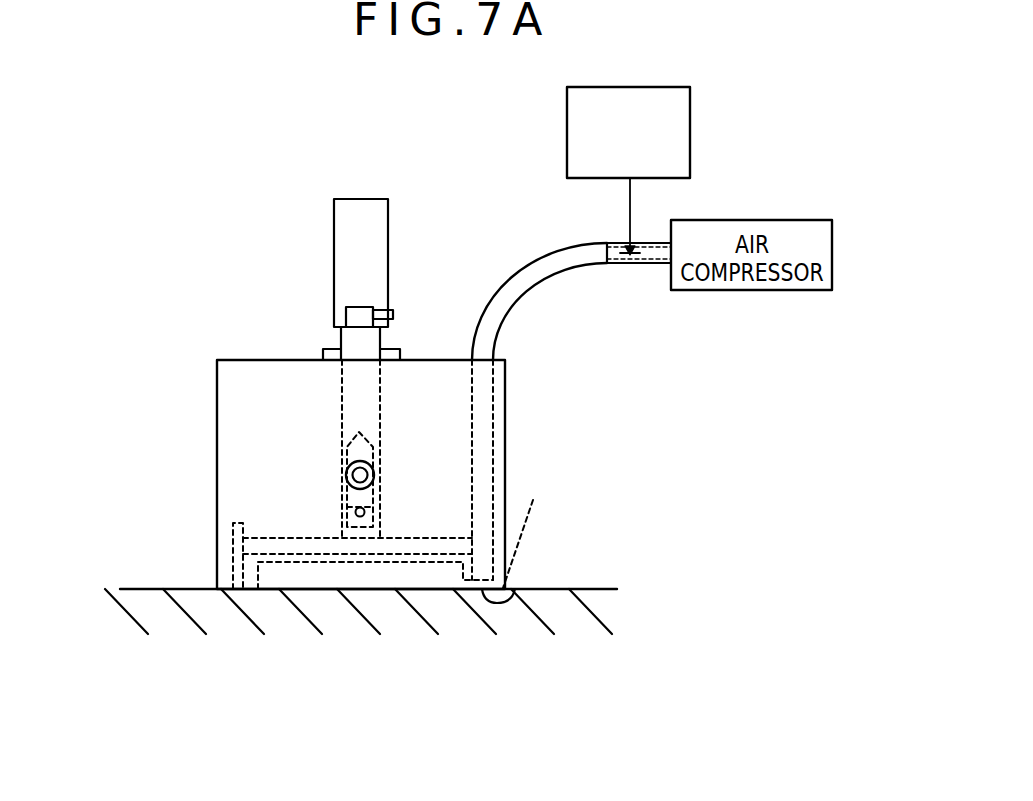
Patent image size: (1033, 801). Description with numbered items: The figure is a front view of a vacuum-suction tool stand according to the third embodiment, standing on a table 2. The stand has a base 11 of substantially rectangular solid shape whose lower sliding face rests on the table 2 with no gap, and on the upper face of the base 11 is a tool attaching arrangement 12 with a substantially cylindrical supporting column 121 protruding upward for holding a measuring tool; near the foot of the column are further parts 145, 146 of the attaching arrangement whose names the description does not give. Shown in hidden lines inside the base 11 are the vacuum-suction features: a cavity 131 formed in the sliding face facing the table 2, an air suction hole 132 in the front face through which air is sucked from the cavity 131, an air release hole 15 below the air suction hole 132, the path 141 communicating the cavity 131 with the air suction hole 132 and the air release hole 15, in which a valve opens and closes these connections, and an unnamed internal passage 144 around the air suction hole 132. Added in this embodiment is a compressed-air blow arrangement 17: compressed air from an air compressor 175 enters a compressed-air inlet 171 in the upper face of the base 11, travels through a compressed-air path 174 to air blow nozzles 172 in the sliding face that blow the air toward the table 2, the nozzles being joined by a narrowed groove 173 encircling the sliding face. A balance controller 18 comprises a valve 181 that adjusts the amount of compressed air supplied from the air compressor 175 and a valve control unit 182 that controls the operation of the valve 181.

The table 2 is at (157, 613).
The base 11 is at (224, 452).
The tool attaching arrangement 12 is at (395, 207).
The air release hole 15 is at (346, 505).
The compressed-air blow arrangement 17 is at (645, 345).
The balance controller 18 is at (770, 125).
The supporting column 121 is at (224, 568).
The cavity 131 is at (438, 584).
The air suction hole 132 is at (375, 476).
The path 141 is at (372, 339).
The internal passage 144 is at (366, 438).
The holder block 145 is at (358, 314).
The connector 146 is at (385, 313).
The compressed-air inlet 171 is at (497, 352).
The air blow nozzle 172 is at (537, 502).
The narrowed groove 173 is at (515, 589).
The compressed-air path 174 is at (485, 418).
The air compressor 175 is at (684, 290).
The valve 181 is at (640, 250).
The valve control unit 182 is at (691, 137).